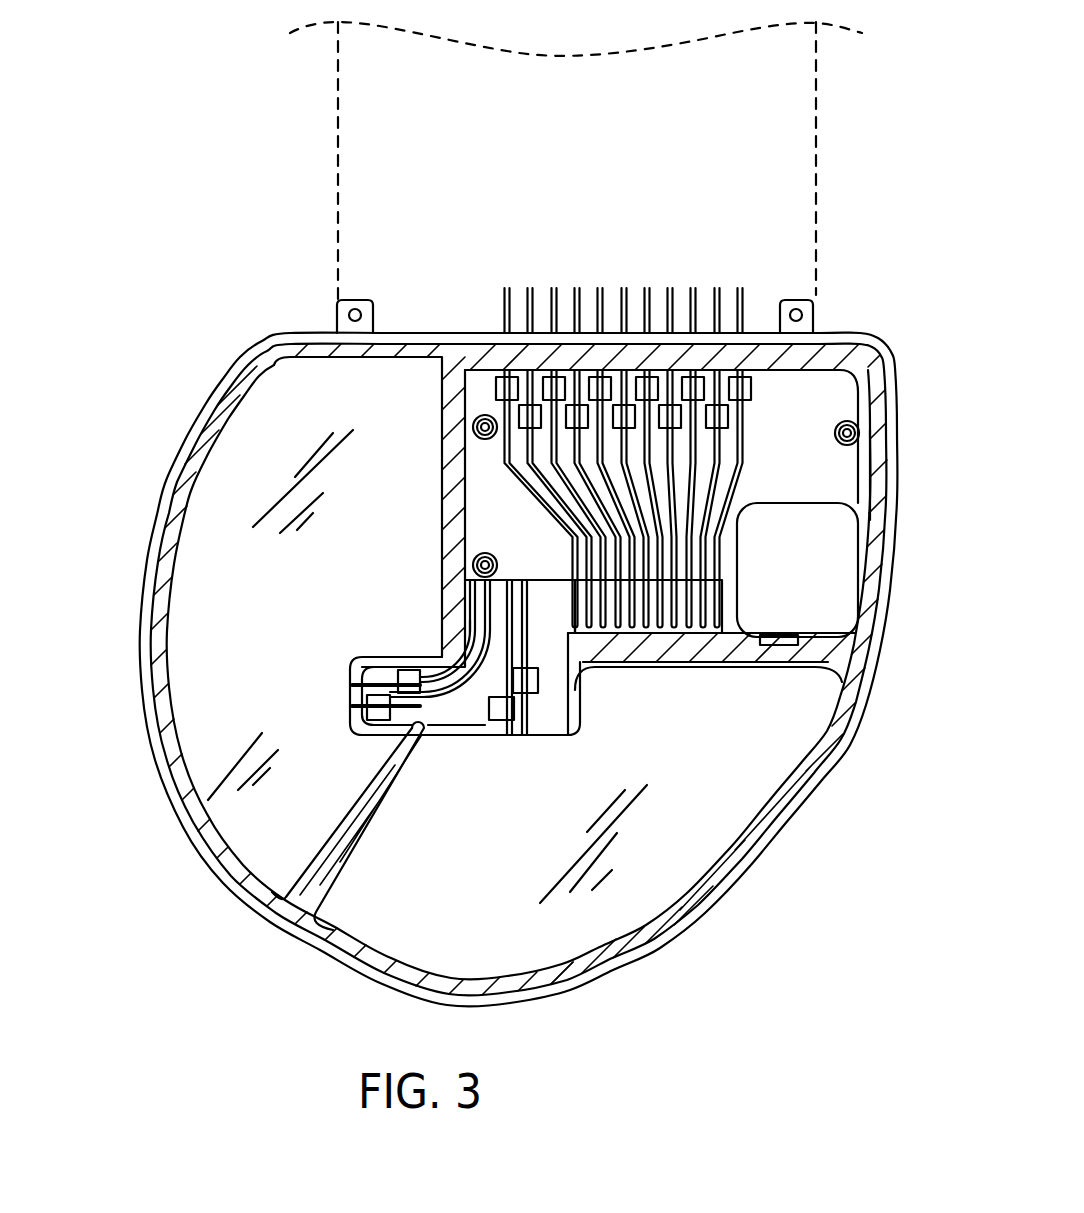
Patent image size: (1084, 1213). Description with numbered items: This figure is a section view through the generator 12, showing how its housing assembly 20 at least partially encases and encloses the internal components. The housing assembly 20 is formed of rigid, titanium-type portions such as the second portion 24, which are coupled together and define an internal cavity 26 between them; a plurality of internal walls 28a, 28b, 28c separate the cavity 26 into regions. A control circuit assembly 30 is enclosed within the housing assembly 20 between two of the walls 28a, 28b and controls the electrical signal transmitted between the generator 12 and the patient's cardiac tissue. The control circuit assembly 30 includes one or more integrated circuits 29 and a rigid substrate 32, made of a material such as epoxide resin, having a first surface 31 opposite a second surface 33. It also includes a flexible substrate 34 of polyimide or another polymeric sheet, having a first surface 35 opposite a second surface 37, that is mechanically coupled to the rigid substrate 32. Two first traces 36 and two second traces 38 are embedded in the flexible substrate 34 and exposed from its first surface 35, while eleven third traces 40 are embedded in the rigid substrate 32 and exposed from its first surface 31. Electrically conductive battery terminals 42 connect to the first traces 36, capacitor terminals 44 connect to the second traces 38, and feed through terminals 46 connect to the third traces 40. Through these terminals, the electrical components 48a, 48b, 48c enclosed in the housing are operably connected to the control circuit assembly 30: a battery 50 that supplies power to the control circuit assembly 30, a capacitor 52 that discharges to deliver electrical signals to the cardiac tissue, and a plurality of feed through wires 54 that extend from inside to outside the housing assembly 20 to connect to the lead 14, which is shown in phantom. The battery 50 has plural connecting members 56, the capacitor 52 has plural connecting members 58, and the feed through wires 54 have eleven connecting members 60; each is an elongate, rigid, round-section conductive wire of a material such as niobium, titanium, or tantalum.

The generator 12 is at (160, 344).
The lead 14 is at (817, 239).
The housing assembly 20 is at (158, 778).
The second portion 24 is at (475, 675).
The internal cavity 26 is at (417, 930).
The internal wall 28a is at (733, 653).
The internal wall 28b is at (450, 462).
The internal wall 28c is at (350, 823).
The integrated circuit 29 is at (843, 413).
The control circuit assembly 30 is at (838, 482).
The first surface 31 is at (806, 495).
The rigid substrate 32 is at (832, 392).
The second surface 33 is at (875, 522).
The flexible substrate 34 is at (555, 645).
The first surface 35 is at (482, 725).
The first traces 36 is at (513, 583).
The second surface 37 is at (462, 737).
The second traces 38 is at (492, 603).
The third traces 40 is at (505, 437).
The battery terminals 42 is at (535, 680).
The capacitor terminals 44 is at (410, 673).
The feed through terminals 46 is at (745, 383).
The electrical component 48a is at (675, 835).
The electrical component 48b is at (209, 606).
The electrical component 48c is at (490, 303).
The battery 50 is at (560, 943).
The capacitor 52 is at (189, 668).
The feed through wires 54 is at (498, 277).
The connecting members 56 is at (527, 722).
The connecting members 58 is at (352, 687).
The connecting members 60 is at (745, 318).